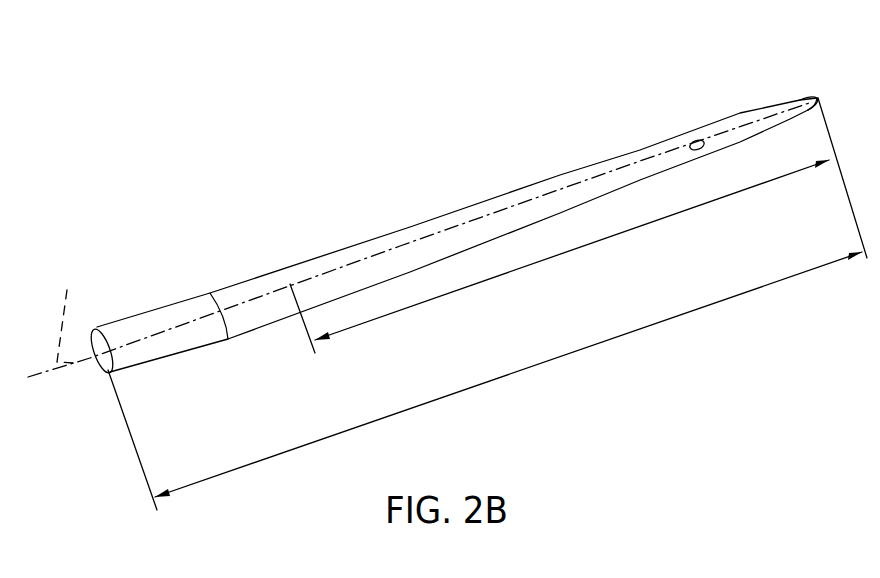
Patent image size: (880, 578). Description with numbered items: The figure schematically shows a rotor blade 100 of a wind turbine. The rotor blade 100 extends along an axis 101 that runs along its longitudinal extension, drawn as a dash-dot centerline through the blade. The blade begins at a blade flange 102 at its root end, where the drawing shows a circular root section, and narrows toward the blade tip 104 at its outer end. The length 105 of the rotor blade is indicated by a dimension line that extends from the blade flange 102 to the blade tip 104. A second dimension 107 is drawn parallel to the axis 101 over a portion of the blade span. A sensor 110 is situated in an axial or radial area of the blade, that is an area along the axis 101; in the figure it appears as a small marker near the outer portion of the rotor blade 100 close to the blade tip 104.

The rotor blade 100 is at (318, 150).
The axis 101 is at (63, 306).
The blade flange 102 is at (100, 296).
The blade tip 104 is at (817, 97).
The length 105 is at (613, 337).
The partial blade length / span section 107 is at (722, 197).
The sensor 110 is at (693, 139).